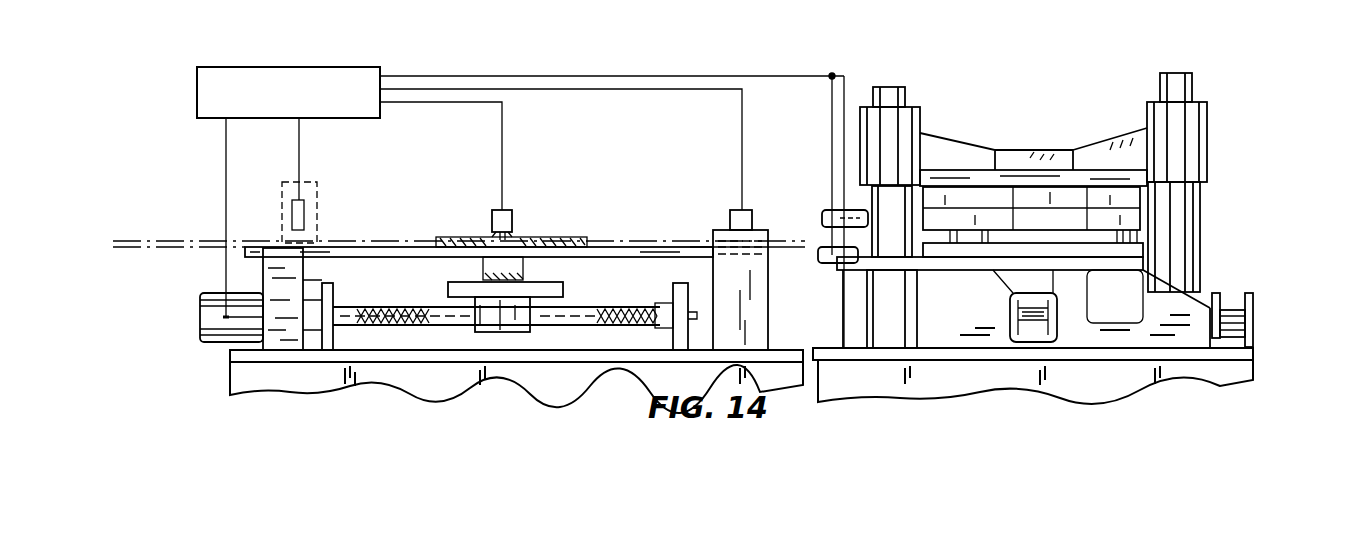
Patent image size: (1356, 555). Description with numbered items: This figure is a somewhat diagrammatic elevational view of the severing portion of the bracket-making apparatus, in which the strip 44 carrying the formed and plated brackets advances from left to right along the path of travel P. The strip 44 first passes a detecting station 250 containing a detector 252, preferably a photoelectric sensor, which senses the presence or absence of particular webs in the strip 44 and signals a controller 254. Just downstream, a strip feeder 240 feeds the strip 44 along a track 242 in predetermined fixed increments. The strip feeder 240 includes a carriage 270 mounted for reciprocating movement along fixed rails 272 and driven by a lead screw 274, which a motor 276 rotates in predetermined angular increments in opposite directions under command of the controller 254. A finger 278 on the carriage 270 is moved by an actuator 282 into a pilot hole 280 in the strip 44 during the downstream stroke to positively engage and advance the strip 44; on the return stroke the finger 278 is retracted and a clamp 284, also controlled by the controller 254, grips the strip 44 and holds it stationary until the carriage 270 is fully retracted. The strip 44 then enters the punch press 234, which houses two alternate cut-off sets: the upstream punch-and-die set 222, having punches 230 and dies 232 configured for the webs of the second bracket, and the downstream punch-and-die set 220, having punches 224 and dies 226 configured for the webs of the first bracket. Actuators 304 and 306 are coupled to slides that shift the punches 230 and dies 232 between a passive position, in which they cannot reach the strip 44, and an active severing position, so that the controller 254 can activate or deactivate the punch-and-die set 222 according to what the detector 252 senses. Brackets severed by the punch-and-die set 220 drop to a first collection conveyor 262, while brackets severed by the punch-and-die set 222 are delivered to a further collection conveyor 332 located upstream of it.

The controller 254 is at (290, 44).
The detecting station 250 is at (305, 183).
The detector 252 is at (305, 214).
The strip 44 is at (196, 241).
The track 242 is at (632, 246).
The path of travel P is at (608, 241).
The motor 276 is at (200, 310).
The lead screw 274 is at (372, 313).
The fixed rails 272 is at (553, 312).
The carriage 270 is at (565, 290).
The strip feeder 240 is at (448, 290).
The actuator 282 is at (511, 212).
The finger 278 is at (515, 232).
The pilot hole 280 is at (525, 241).
The clamp 284 is at (748, 208).
The actuator 304 is at (822, 219).
The actuator 306 is at (818, 258).
The punch press 234 is at (1195, 105).
The punch-and-die set 220 is at (1160, 203).
The punches 230 is at (935, 220).
The punch-and-die set 222 is at (1020, 203).
The punches 224 is at (1093, 221).
The dies 226 is at (1130, 268).
The dies 232 is at (945, 258).
The further collection conveyor 332 is at (1057, 312).
The first collection conveyor 262 is at (1228, 308).